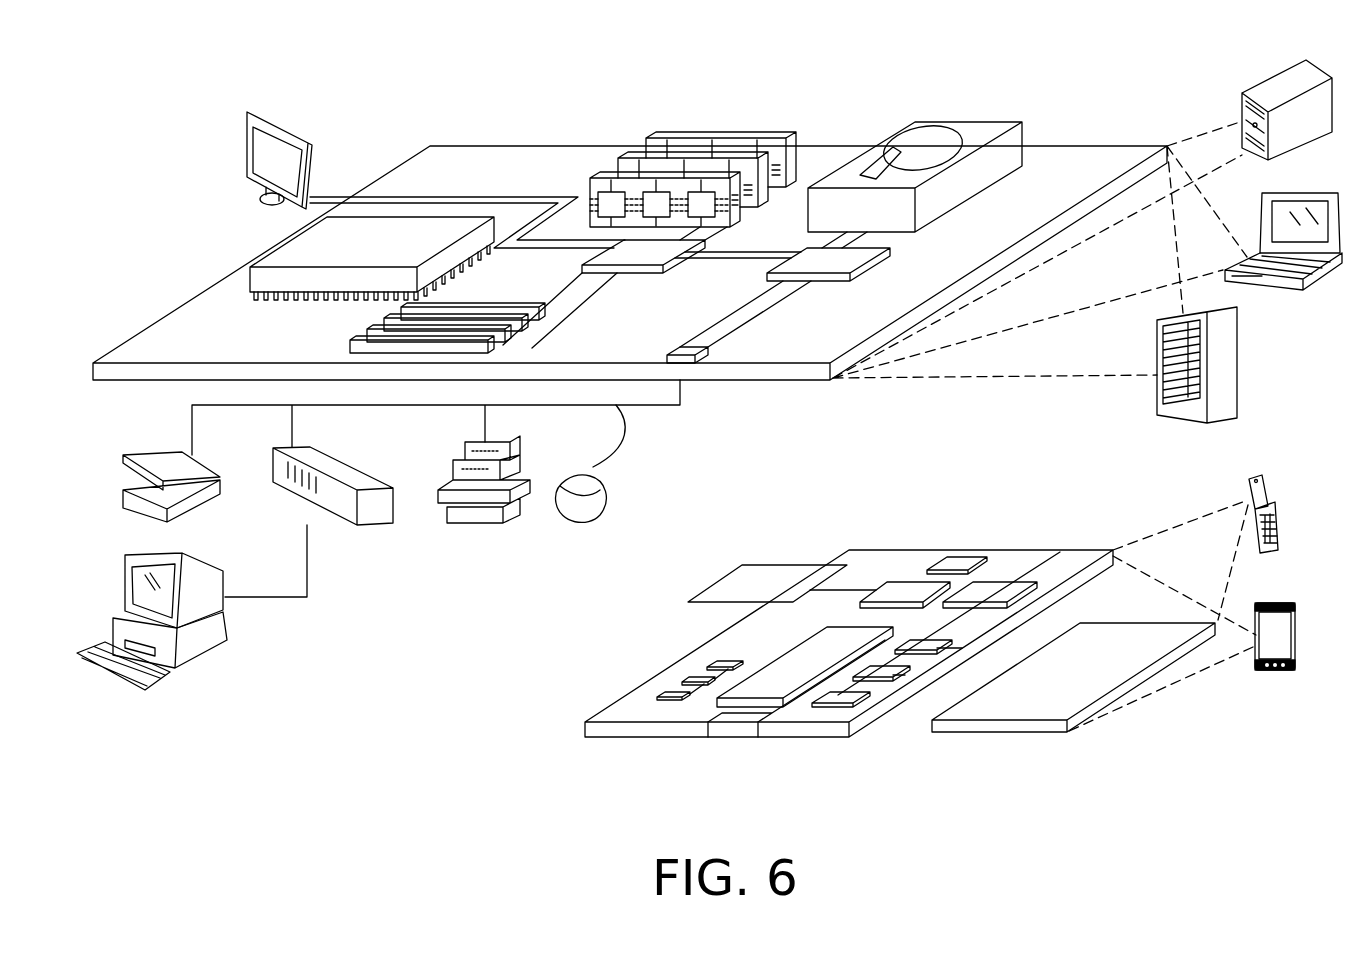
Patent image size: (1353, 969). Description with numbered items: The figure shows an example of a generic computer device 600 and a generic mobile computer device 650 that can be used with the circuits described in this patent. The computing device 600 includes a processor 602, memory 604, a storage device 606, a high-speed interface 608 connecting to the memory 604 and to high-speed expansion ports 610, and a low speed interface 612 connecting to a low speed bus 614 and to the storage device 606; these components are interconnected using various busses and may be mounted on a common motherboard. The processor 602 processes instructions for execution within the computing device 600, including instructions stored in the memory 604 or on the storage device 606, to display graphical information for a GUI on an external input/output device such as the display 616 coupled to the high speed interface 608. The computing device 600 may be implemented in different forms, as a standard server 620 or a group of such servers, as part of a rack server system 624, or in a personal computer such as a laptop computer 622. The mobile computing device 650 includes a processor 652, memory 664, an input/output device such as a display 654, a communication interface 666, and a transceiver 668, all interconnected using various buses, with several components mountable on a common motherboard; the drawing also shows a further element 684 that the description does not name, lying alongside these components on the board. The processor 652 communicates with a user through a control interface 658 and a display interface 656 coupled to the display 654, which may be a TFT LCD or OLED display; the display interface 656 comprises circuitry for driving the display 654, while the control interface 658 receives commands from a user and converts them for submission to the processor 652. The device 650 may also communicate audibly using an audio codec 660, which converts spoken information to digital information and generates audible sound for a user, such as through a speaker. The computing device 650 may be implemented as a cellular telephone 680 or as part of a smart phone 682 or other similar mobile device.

The computing device 600 is at (385, 90).
The processor 602 is at (278, 249).
The memory 604 is at (725, 138).
The storage device 606 is at (957, 121).
The high-speed interface 608 is at (657, 252).
The high-speed expansion ports 610 is at (375, 322).
The low speed interface 612 is at (802, 254).
The low speed bus 614 is at (687, 348).
The display 616 is at (254, 112).
The standard server 620 is at (1262, 89).
The laptop computer 622 is at (1314, 192).
The rack server system 624 is at (1240, 363).
The mobile computer device 650 is at (1153, 731).
The processor 652 is at (773, 672).
The display 654 is at (1110, 636).
The display interface 656 is at (850, 696).
The control interface 658 is at (890, 670).
The audio codec 660 is at (927, 642).
The memory 664 is at (690, 678).
The communication interface 666 is at (903, 585).
The transceiver 668 is at (998, 588).
The cellular telephone 680 is at (960, 562).
The smart phone 682 is at (1262, 603).
The panel 684 is at (746, 565).